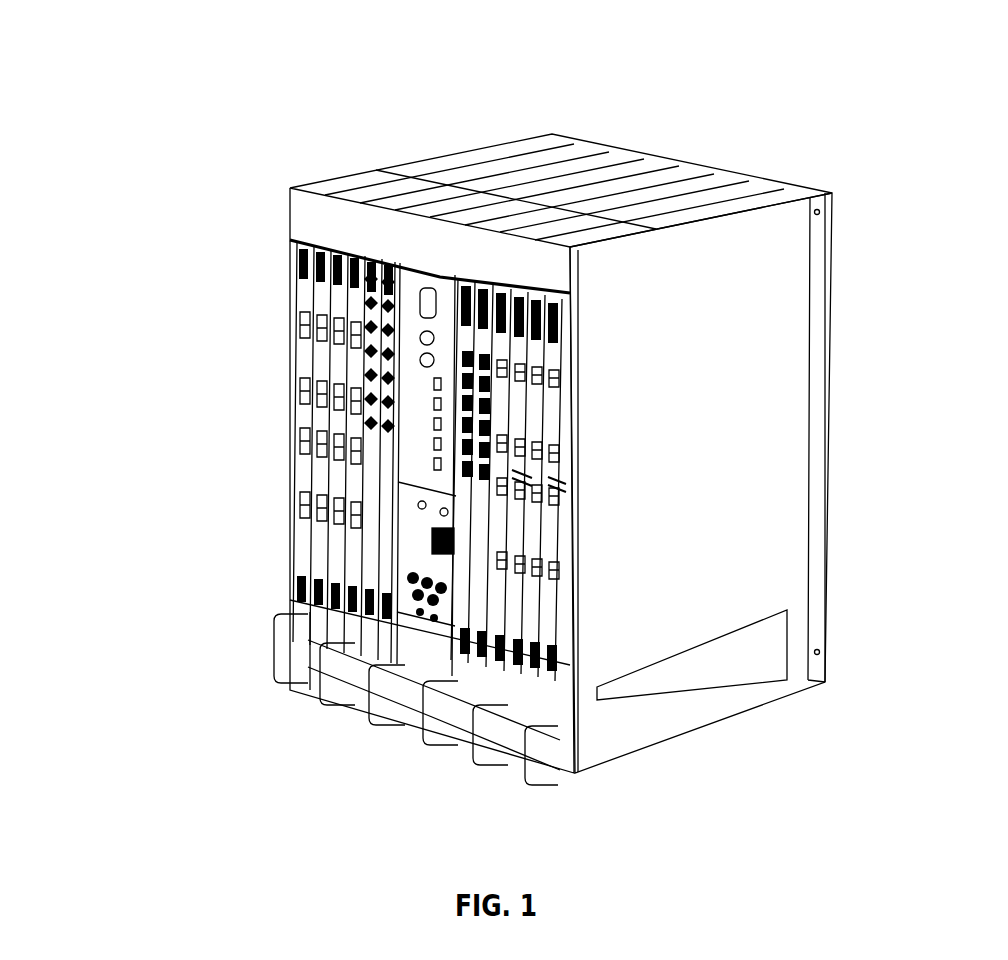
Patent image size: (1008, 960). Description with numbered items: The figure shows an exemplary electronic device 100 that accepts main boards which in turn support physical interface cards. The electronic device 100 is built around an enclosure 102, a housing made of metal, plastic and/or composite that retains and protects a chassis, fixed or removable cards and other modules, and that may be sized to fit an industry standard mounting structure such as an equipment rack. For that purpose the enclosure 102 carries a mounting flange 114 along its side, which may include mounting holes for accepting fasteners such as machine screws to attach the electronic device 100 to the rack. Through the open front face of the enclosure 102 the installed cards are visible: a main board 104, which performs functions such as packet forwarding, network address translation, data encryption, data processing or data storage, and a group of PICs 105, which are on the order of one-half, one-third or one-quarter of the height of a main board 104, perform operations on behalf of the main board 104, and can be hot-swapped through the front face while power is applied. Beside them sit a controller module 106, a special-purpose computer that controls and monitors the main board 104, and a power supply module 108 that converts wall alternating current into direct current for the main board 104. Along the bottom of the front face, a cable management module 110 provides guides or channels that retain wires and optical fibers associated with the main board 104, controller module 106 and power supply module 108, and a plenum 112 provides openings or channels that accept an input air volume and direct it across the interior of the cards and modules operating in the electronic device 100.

The electronic device 100 is at (212, 28).
The enclosure 102 is at (540, 178).
The main board 104 is at (322, 298).
The PICs 105 is at (523, 630).
The controller module 106 is at (413, 418).
The power supply module 108 is at (425, 538).
The cable management module 110 is at (263, 652).
The plenum 112 is at (440, 683).
The mounting flange 114 is at (872, 165).